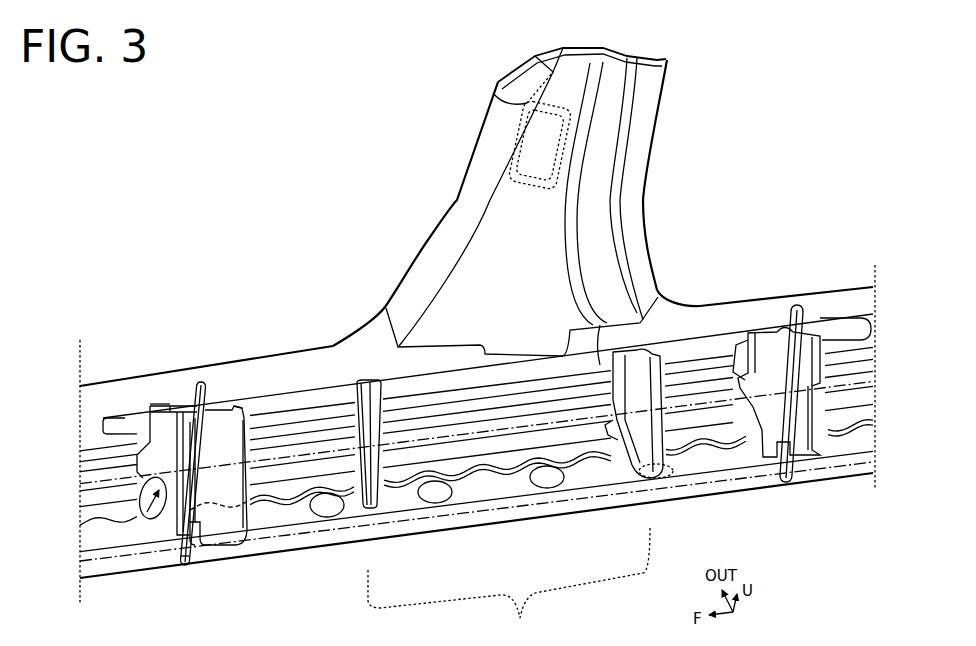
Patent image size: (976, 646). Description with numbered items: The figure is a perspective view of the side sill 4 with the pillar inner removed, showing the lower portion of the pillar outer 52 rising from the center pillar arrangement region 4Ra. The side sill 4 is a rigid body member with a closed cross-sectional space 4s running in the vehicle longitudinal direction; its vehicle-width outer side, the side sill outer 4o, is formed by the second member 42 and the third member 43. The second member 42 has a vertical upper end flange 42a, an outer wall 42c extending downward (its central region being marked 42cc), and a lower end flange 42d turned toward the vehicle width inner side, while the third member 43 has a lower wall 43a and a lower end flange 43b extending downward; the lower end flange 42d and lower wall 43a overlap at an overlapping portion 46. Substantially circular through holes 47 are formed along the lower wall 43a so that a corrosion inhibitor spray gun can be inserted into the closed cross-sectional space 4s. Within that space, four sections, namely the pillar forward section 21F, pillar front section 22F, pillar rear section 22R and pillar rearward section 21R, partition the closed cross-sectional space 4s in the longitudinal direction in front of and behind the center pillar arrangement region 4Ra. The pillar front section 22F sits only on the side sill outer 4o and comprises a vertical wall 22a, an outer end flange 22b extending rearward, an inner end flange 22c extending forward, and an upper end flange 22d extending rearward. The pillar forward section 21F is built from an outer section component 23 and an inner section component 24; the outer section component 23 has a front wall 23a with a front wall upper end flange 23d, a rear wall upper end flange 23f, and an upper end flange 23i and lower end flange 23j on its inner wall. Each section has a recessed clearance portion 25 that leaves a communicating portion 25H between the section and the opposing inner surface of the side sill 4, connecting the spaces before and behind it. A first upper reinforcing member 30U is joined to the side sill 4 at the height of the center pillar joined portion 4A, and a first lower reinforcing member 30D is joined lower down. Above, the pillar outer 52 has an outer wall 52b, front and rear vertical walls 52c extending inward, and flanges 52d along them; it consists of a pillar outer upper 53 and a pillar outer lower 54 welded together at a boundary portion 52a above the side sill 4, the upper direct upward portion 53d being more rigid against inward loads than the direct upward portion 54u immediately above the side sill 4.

The side sill 4 is at (442, 445).
The side sill outer 4o is at (767, 296).
The center pillar joined portion 4A is at (570, 327).
The closed cross-sectional space 4s is at (465, 428).
The center pillar arrangement region 4Ra is at (509, 586).
The pillar forward section 21F is at (502, 431).
The pillar rearward section 21R is at (815, 472).
The pillar front section 22F is at (499, 429).
The pillar rear section 22R is at (668, 348).
The vertical wall 22a is at (360, 423).
The outer end flange 22b is at (400, 427).
The inner end flange 22c is at (367, 510).
The upper end flange 22d is at (420, 362).
The outer section component 23 is at (502, 431).
The front wall 23a is at (92, 503).
The front wall upper end flange 23d is at (157, 404).
The rear wall upper end flange 23f is at (233, 408).
The upper end flange 23i is at (200, 381).
The lower end flange 23j is at (188, 560).
The inner section component 24 is at (224, 397).
The clearance portion 25 is at (163, 516).
The communicating portion 25H is at (148, 518).
The first upper reinforcing member 30U is at (101, 426).
The first lower reinforcing member 30D is at (490, 471).
The second member 42 is at (832, 284).
The upper end flange 42a is at (95, 407).
The outer wall 42c is at (476, 427).
The outer panel side wall center 42cc is at (92, 468).
The lower end flange 42d is at (92, 520).
The third member 43 is at (456, 514).
The lower wall 43a is at (94, 548).
The lower end flange 43b is at (96, 560).
The overlapping portion 46 is at (92, 534).
The through holes 47 is at (325, 512).
The pillar outer 52 is at (553, 180).
The boundary portion 52a is at (492, 98).
The outer wall 52b is at (543, 52).
The vertical wall 52c is at (527, 68).
The flange 52d is at (505, 80).
The pillar outer upper 53 is at (496, 58).
The upper direct upward portion 53d is at (674, 65).
The pillar outer lower 54 is at (530, 185).
The direct upward portion 54u is at (671, 143).